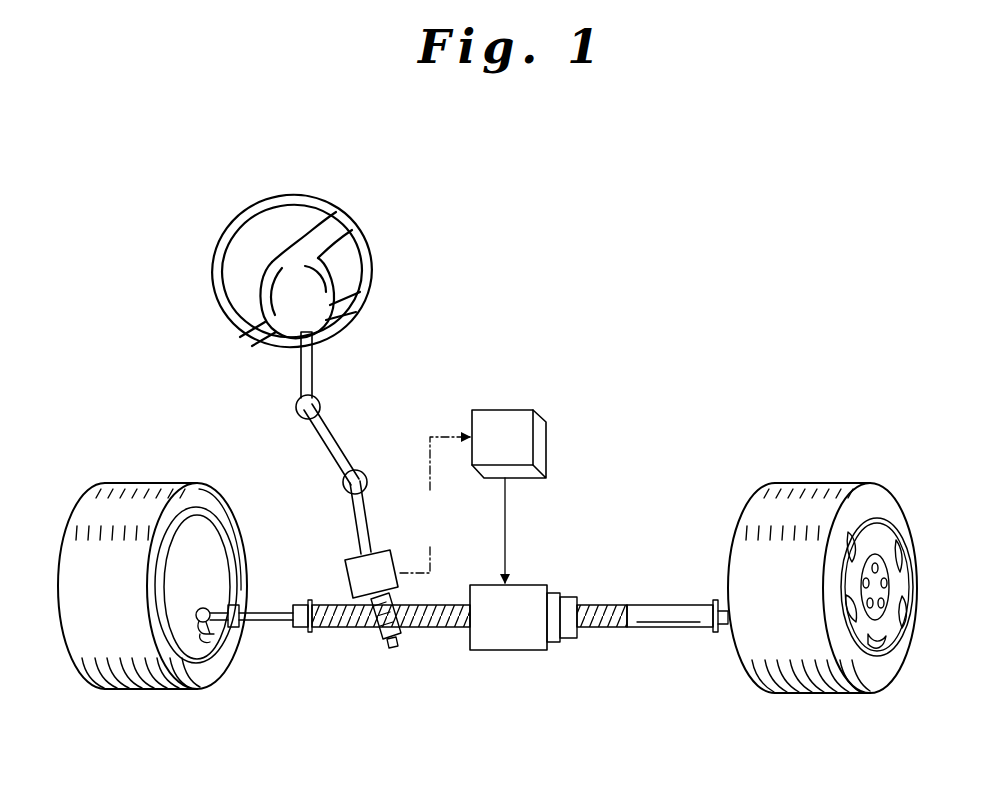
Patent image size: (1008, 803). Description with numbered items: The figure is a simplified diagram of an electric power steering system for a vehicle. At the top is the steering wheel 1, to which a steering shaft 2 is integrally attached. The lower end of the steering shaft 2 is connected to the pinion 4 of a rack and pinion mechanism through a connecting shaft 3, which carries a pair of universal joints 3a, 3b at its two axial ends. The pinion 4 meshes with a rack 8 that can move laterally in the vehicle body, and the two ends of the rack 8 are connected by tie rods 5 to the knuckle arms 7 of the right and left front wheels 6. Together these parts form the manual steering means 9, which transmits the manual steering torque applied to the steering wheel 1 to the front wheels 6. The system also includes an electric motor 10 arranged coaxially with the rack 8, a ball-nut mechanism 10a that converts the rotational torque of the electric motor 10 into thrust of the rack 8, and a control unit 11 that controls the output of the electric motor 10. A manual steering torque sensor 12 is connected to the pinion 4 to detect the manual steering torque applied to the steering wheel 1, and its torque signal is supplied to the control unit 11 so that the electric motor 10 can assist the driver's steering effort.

The steering wheel 1 is at (372, 252).
The steering shaft 2 is at (300, 383).
The connecting shaft 3 is at (330, 455).
The universal joint 3a is at (313, 400).
The universal joint 3b is at (360, 472).
The pinion 4 is at (378, 634).
The tie rod 5 is at (279, 628).
The front wheel 6 is at (149, 483).
The knuckle arm 7 is at (209, 632).
The rack 8 is at (445, 630).
The manual steering means 9 is at (410, 697).
The electric motor 10 is at (530, 650).
The ball-nut mechanism 10a is at (570, 640).
The control unit 11 is at (548, 446).
The manual steering torque sensor 12 is at (346, 566).